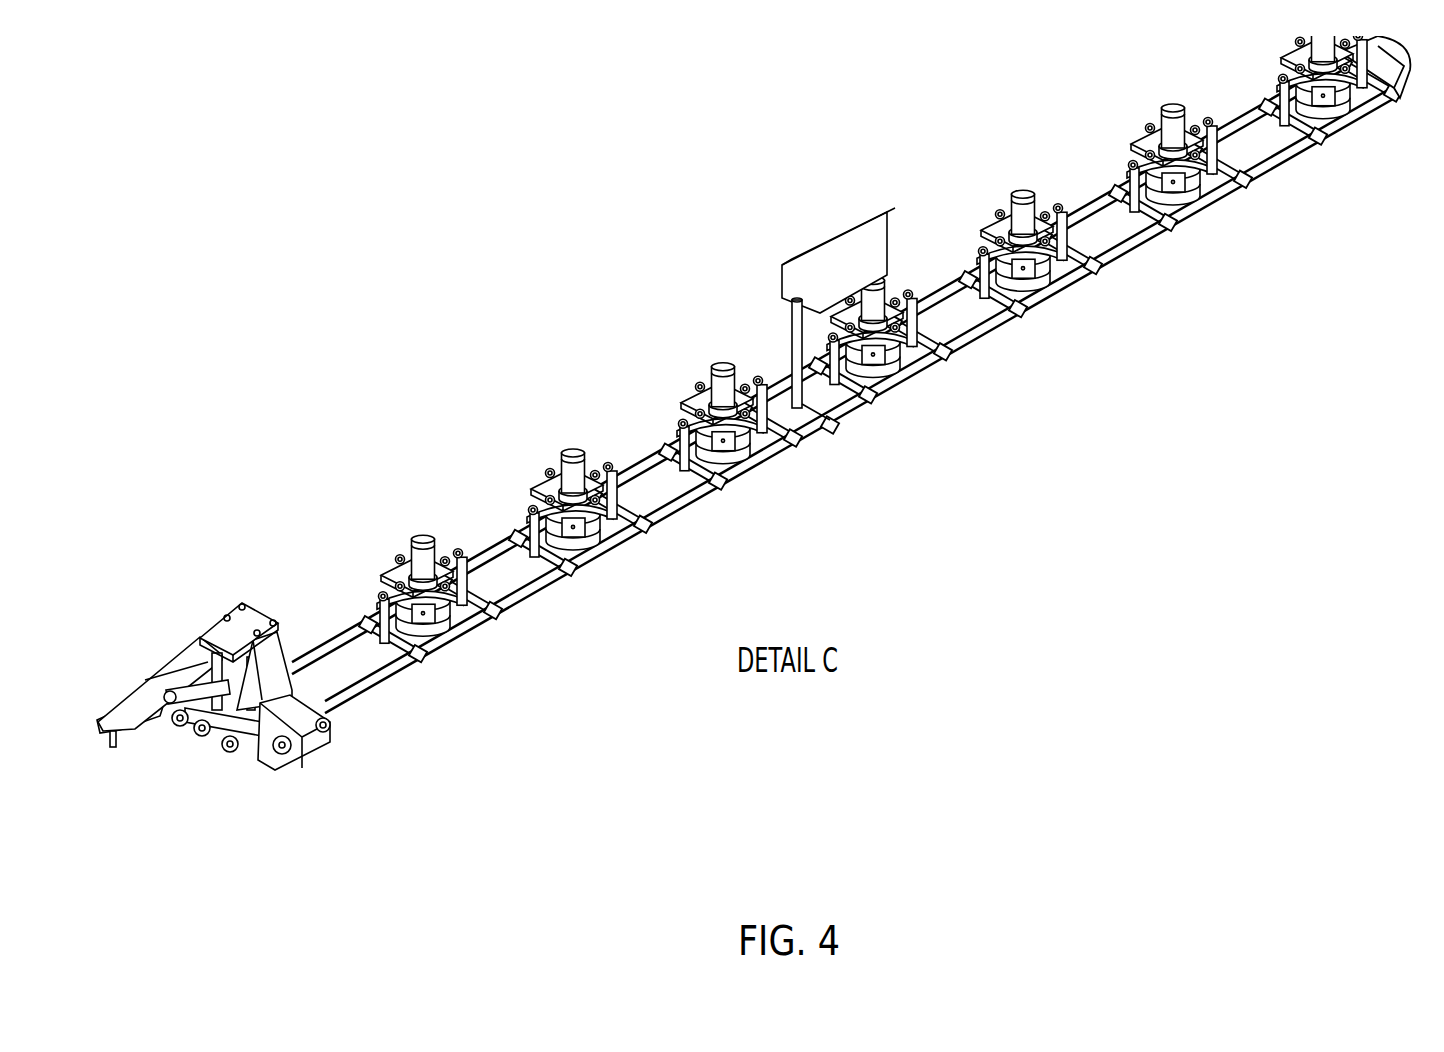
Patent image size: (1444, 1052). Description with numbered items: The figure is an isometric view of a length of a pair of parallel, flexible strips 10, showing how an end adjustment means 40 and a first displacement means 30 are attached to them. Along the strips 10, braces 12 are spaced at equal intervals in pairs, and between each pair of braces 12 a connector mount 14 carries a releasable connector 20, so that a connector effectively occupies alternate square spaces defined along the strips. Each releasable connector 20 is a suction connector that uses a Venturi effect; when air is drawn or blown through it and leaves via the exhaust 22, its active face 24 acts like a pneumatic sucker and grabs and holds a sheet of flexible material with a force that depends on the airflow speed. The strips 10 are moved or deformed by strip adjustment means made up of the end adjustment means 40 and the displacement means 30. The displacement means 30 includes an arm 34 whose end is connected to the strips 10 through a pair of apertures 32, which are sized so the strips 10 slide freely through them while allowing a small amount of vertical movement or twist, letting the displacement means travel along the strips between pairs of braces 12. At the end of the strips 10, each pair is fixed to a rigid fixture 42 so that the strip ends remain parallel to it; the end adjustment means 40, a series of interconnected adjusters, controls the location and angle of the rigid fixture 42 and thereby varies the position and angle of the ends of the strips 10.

The pair of parallel, flexible strips 10 is at (851, 374).
The braces 12 is at (507, 530).
The connector mount 14 is at (550, 473).
The releasable connector 20 is at (1170, 127).
The exhaust 22 is at (722, 373).
The active face 24 is at (730, 470).
The first displacement means 30 is at (820, 342).
The apertures 32 is at (832, 431).
The arm 34 is at (866, 253).
The end adjustment means 40 is at (229, 734).
The rigid fixture 42 is at (307, 760).